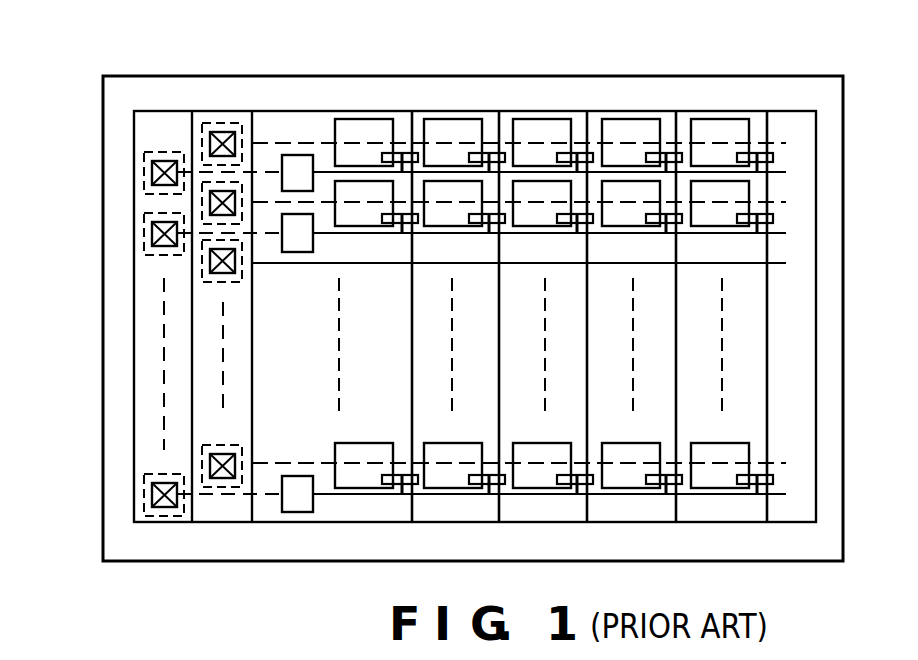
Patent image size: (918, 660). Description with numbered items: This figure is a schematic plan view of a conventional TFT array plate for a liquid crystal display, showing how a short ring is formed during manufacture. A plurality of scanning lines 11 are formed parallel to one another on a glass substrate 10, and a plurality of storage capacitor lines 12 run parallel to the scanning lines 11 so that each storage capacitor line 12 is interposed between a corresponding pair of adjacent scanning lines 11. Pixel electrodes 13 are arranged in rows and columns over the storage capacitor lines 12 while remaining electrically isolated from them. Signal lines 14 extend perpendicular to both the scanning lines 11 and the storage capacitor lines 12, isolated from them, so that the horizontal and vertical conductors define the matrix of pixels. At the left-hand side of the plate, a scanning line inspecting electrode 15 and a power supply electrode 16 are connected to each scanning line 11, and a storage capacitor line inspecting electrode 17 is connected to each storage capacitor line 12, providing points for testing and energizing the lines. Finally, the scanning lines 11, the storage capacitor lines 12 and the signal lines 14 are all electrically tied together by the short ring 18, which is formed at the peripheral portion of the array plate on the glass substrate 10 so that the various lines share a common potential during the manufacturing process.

The glass substrate 10 is at (598, 77).
The scanning line 11 is at (328, 173).
The storage capacitor line 12 is at (273, 142).
The pixel electrode 13 is at (462, 133).
The signal line 14 is at (413, 136).
The scanning line inspecting electrode 15 is at (298, 163).
The power supply electrode 16 is at (153, 178).
The storage capacitor line inspecting electrode 17 is at (223, 127).
The short ring 18 is at (168, 112).